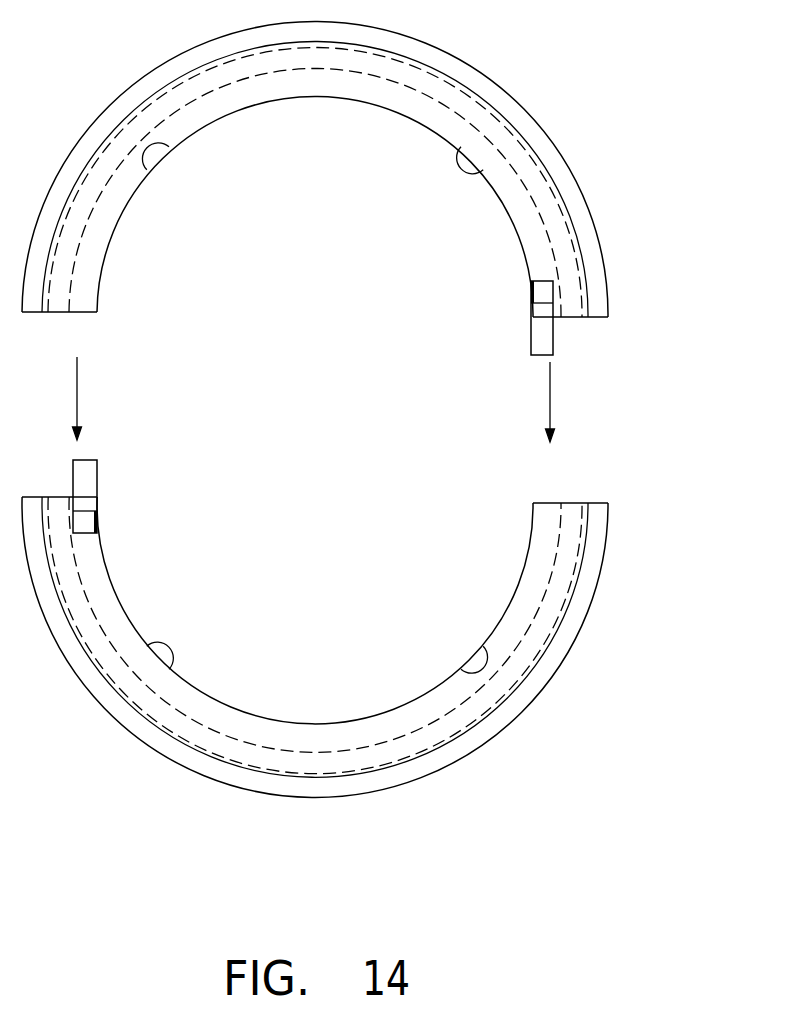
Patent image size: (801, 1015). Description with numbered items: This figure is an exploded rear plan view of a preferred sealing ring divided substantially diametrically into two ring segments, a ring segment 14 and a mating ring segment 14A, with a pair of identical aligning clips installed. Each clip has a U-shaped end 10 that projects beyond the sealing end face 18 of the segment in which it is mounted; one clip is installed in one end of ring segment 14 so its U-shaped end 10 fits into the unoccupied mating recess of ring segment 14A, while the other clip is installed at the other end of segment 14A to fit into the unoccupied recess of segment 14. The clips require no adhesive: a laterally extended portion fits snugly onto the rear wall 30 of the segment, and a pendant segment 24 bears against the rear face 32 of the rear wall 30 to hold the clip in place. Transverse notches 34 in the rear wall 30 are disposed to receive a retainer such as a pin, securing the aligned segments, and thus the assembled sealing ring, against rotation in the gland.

The U-shaped end 10 is at (315, 409).
The ring segment 14 is at (315, 619).
The mating ring segment 14A is at (403, 140).
The sealing end face 18 is at (575, 503).
The pendant segment 24 is at (531, 290).
The rear wall 30 is at (515, 590).
The rear face 32 is at (310, 75).
The transverse notches 34 is at (165, 180).